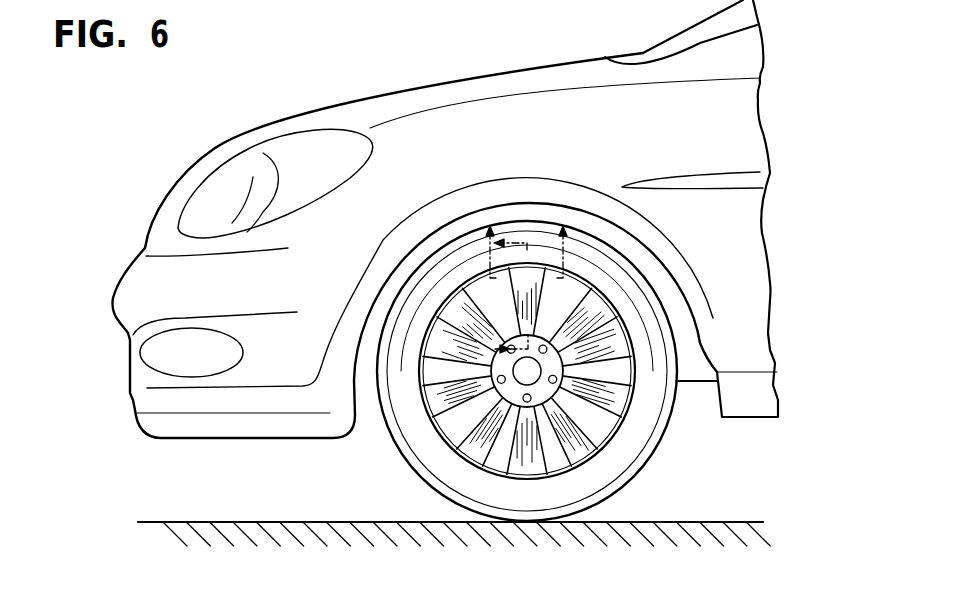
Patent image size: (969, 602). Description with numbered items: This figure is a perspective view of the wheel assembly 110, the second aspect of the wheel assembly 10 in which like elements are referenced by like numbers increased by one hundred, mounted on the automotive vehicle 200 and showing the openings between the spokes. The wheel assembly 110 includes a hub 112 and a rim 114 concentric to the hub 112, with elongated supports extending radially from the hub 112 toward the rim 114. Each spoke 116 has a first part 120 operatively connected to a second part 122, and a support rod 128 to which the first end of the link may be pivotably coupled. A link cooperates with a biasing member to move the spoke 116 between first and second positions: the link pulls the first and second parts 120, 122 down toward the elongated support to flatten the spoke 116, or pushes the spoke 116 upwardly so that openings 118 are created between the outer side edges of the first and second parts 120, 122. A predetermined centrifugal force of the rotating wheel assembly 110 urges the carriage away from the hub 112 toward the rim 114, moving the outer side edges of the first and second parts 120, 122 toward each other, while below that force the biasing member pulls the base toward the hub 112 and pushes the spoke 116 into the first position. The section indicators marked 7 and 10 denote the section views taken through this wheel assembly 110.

The vehicle 200 is at (518, 92).
The wheel assembly 110 is at (396, 455).
The hub 112 is at (563, 371).
The rim 114 is at (615, 327).
The spoke 116 is at (516, 194).
The openings 118 is at (490, 290).
The first part 120 is at (492, 288).
The second part 122 is at (548, 262).
The support rod 128 is at (534, 278).
The wheel assembly 10 is at (497, 282).
The section line 7- 7 is at (529, 251).